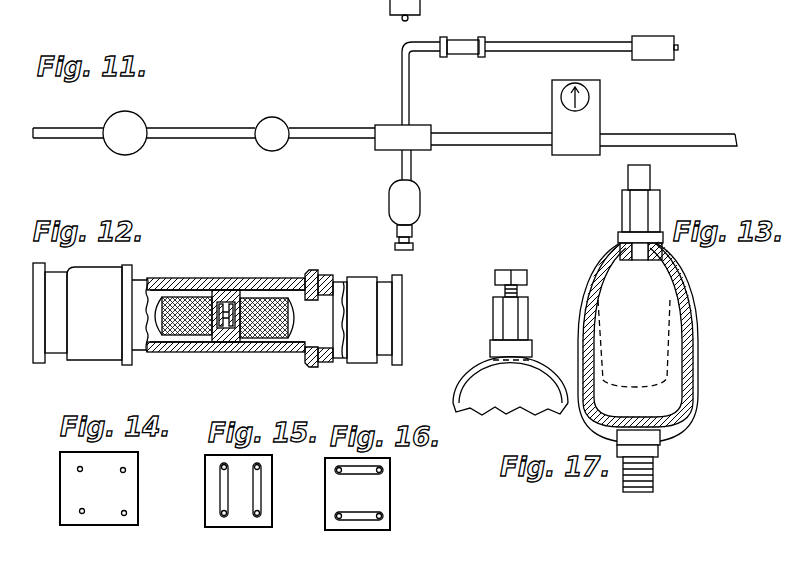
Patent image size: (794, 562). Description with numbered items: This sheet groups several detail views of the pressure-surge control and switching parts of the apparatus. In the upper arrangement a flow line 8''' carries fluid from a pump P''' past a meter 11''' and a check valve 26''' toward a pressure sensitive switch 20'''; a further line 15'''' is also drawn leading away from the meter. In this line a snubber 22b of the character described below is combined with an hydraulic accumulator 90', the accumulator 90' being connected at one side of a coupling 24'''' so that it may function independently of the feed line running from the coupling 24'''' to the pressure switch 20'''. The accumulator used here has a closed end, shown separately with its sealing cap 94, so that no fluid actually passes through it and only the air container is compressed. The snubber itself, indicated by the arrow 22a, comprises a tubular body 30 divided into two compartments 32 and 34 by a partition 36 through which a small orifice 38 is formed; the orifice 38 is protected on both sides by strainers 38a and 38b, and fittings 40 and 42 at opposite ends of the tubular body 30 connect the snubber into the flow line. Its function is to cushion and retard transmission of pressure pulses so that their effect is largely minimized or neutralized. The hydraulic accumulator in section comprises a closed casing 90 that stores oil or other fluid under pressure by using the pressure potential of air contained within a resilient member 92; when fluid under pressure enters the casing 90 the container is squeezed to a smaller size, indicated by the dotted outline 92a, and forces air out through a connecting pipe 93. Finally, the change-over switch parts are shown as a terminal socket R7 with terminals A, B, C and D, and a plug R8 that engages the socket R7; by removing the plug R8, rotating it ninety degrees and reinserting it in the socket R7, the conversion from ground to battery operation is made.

In FIG. 11, the pump P''' is at (143, 124).
In FIG. 11, the flow line 8''' is at (204, 117).
In FIG. 11, the check valve 26''' is at (298, 122).
In FIG. 11, the coupling 24'''' is at (425, 122).
In FIG. 11, the snubber 22b is at (458, 44).
In FIG. 11, the pressure sensitive switch 20''' is at (666, 32).
In FIG. 11, the outlet line 15'''' is at (593, 124).
In FIG. 11, the meter 11''' is at (598, 117).
In FIG. 11, the hydraulic accumulator 90' is at (429, 211).
In FIG. 17, the hydraulic accumulator 90' is at (511, 368).
In FIG. 11, the sealing cap 94 is at (415, 246).
In FIG. 17, the sealing cap 94 is at (517, 268).
In FIG. 12, the fitting 40 is at (80, 343).
In FIG. 12, the snubber 22a is at (270, 279).
In FIG. 12, the compartment 34 is at (153, 290).
In FIG. 12, the strainer 38a is at (177, 330).
In FIG. 12, the partition 36 is at (223, 290).
In FIG. 12, the orifice 38 is at (219, 330).
In FIG. 12, the tubular body 30 is at (233, 330).
In FIG. 12, the strainer 38b is at (282, 332).
In FIG. 12, the compartment 32 is at (300, 348).
In FIG. 12, the fitting 42 is at (347, 354).
In FIG. 13, the connecting pipe 93 is at (650, 175).
In FIG. 13, the dotted outline 92a is at (695, 318).
In FIG. 13, the closed casing 90 is at (662, 343).
In FIG. 13, the resilient member 92 is at (684, 392).
In FIG. 14, the terminal A is at (77, 469).
In FIG. 14, the terminal B is at (126, 470).
In FIG. 14, the terminal C is at (127, 513).
In FIG. 14, the terminal D is at (79, 511).
In FIG. 14, the terminal socket R7 is at (102, 517).
In FIG. 15, the plug R8 is at (243, 517).
In FIG. 16, the plug R8 is at (363, 527).